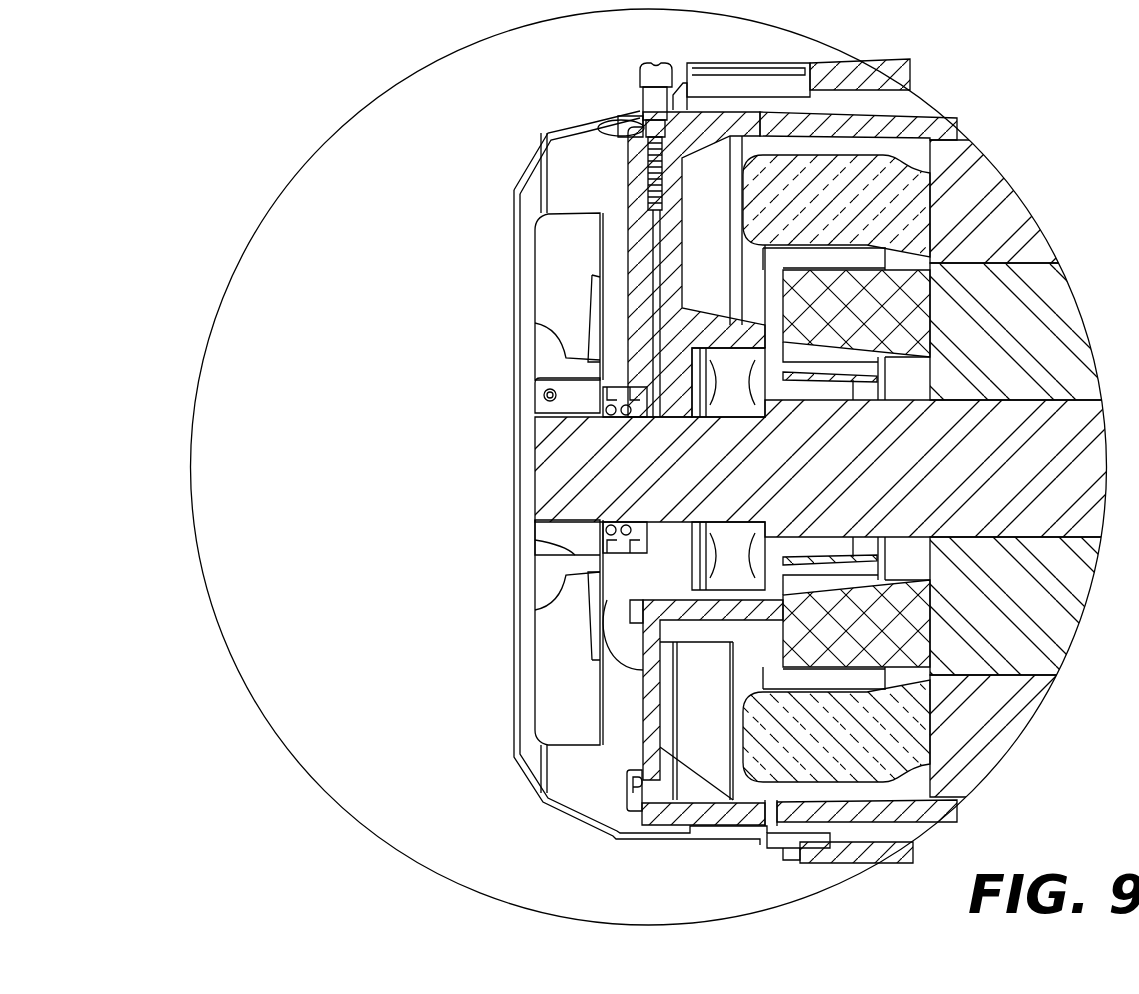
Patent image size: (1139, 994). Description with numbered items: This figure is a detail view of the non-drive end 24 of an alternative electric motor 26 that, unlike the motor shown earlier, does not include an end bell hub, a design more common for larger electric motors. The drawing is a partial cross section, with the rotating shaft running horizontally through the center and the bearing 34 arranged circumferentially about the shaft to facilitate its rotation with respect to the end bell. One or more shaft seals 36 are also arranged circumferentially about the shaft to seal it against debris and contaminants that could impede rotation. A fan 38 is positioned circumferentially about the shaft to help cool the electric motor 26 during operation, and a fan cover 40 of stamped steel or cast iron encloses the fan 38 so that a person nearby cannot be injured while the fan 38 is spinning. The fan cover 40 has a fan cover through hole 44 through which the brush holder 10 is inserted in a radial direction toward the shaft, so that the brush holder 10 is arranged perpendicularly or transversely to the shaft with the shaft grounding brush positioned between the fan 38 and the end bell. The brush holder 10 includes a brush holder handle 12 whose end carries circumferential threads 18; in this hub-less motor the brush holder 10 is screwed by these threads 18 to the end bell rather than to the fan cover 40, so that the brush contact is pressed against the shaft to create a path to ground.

The brush holder 10 is at (655, 65).
The brush holder handle 12 is at (663, 100).
The threads 18 is at (640, 127).
The non-drive end 24 is at (408, 339).
The electric motor 26 is at (833, 68).
The bearing 34 is at (740, 408).
The shaft seals 36 is at (612, 413).
The fan 38 is at (550, 699).
The fan cover 40 is at (520, 153).
The fan cover through hole 44 is at (632, 107).